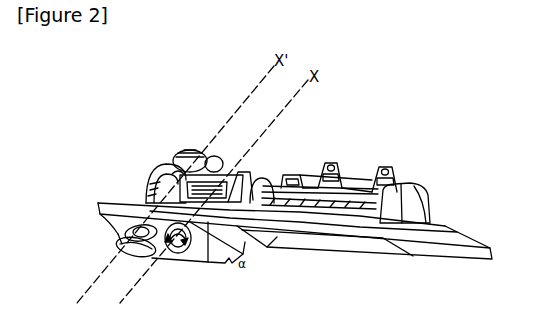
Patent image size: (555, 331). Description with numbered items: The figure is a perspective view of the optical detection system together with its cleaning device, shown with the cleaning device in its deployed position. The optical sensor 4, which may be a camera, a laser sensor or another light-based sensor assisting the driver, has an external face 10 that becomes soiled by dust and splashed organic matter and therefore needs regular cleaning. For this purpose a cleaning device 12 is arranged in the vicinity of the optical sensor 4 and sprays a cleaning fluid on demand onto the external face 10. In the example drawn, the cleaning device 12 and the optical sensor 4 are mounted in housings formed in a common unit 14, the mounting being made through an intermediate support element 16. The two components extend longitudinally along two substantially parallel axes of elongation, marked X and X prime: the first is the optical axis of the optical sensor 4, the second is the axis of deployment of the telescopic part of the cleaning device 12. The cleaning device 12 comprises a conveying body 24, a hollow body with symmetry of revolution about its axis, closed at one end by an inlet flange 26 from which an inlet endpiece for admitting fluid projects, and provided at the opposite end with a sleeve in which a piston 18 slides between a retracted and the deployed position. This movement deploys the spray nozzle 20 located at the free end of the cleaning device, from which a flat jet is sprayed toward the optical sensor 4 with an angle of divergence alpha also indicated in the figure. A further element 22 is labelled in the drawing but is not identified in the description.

The optical sensor 4 is at (179, 166).
The external face 10 is at (233, 265).
The cleaning device 12 is at (103, 118).
The common unit 14 is at (359, 101).
The intermediate support element 16 is at (262, 179).
The piston 18 is at (108, 237).
The spray nozzle 20 is at (130, 262).
The rotation boss 22 is at (172, 246).
The conveying body 24 is at (154, 158).
The inlet flange 26 is at (196, 151).